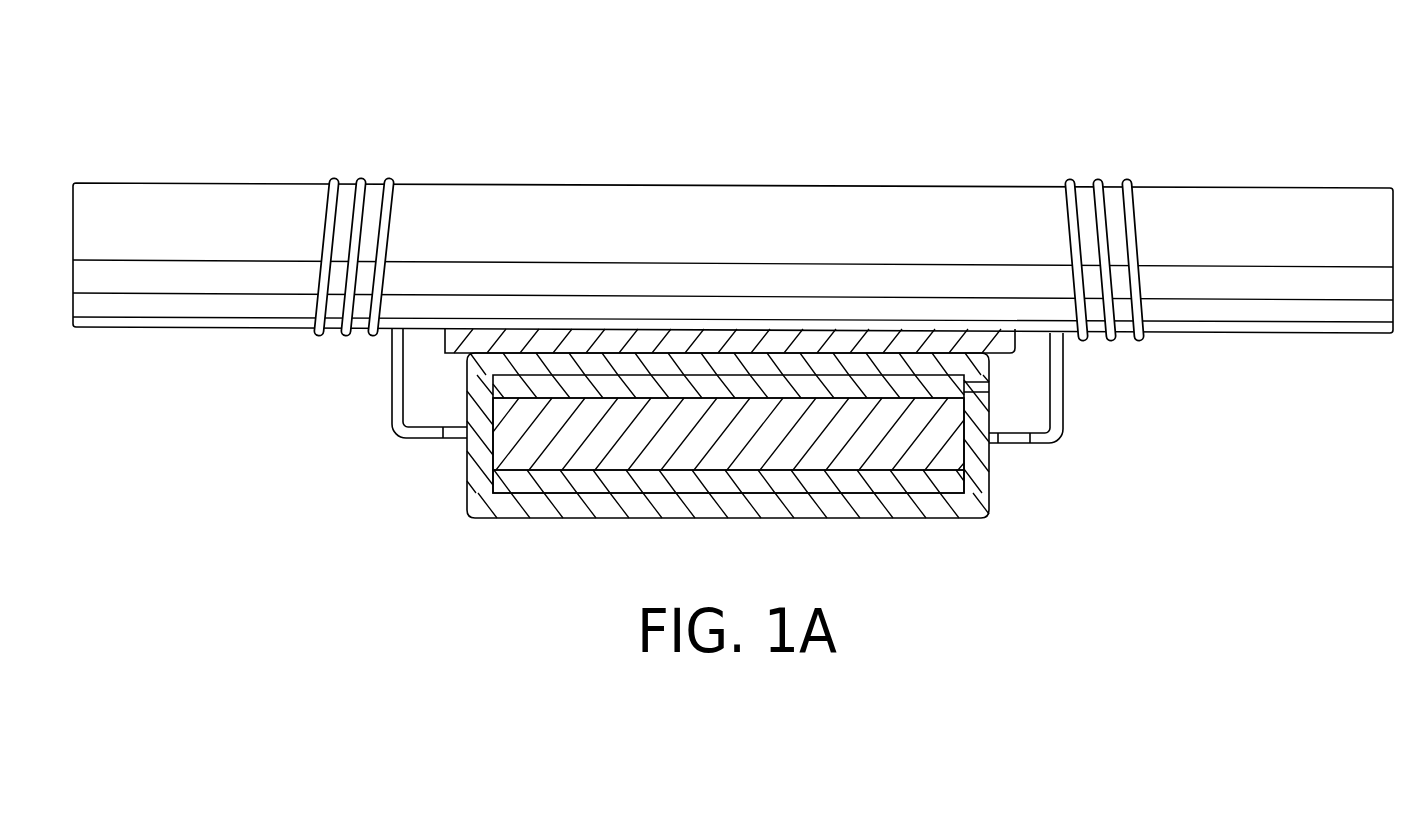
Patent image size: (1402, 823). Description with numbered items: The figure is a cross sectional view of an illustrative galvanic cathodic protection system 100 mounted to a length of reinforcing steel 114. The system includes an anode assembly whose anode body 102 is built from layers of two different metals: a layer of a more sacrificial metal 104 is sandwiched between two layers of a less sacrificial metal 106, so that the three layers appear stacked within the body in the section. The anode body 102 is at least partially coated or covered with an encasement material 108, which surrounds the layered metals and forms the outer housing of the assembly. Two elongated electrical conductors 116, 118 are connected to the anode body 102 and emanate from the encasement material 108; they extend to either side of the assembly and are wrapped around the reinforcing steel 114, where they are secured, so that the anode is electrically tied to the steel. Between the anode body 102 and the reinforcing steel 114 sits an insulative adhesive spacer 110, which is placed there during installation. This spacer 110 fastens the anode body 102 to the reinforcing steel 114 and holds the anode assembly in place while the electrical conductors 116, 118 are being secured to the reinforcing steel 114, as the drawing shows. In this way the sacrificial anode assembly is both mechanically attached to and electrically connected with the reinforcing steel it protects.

The cathodic protection system 100 is at (748, 53).
The anode body 102 is at (467, 482).
The more sacrificial metal 104 is at (813, 452).
The less sacrificial metal 106 is at (593, 482).
The encasement material 108 is at (925, 508).
The insulative adhesive spacer 110 is at (808, 340).
The reinforcing steel 114 is at (638, 187).
The elongated electrical conductor 116 is at (337, 180).
The elongated electrical conductor 118 is at (1068, 180).